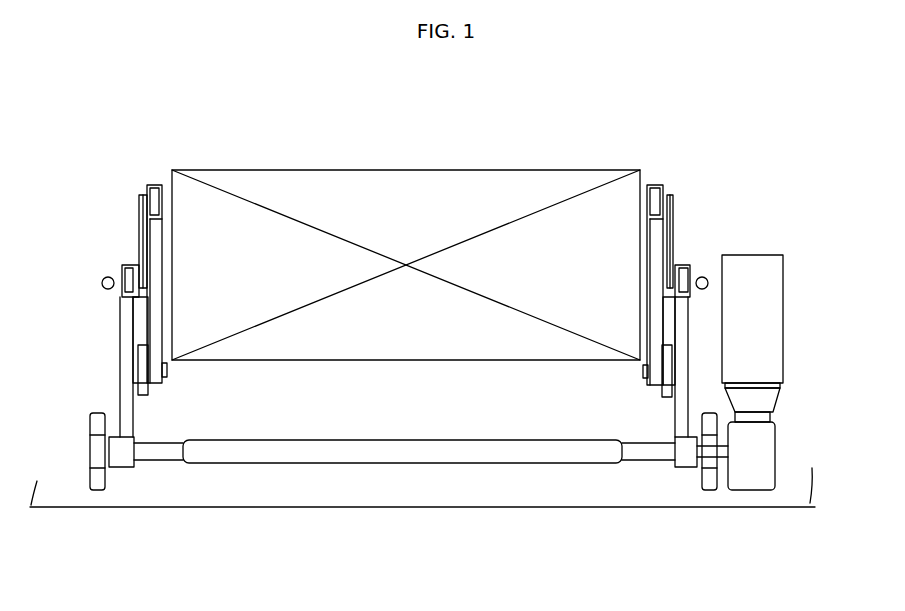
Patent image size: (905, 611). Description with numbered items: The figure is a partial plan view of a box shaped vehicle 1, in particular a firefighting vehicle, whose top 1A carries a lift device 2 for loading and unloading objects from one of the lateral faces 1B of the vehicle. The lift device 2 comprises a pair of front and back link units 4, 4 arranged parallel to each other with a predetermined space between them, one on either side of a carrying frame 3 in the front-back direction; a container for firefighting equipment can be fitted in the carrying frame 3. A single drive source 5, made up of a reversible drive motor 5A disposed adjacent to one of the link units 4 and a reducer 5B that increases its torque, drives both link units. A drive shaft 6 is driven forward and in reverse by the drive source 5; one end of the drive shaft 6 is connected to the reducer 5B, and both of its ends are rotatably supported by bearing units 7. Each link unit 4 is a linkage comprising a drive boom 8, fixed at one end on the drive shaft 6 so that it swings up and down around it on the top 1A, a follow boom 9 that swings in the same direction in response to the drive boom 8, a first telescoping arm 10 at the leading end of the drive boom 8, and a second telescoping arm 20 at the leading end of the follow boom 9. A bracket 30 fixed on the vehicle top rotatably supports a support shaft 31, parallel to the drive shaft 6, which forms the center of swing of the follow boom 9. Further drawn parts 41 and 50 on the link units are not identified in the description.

The vehicle 1 is at (629, 544).
The top of the vehicle 1A is at (320, 498).
The lateral face of the vehicle 1B is at (435, 507).
The lift device 2 is at (710, 172).
The carrying frame 3 is at (425, 170).
The link unit 4 is at (97, 237).
The drive source 5 is at (795, 372).
The drive motor 5A is at (777, 362).
The reducer 5B is at (783, 456).
The drive shaft 6 is at (512, 458).
The bearing unit 7 is at (98, 490).
The drive boom 8 is at (120, 352).
The follow boom 9 is at (148, 313).
The first telescoping arm 10 is at (99, 265).
The second telescoping arm 20 is at (140, 167).
The bracket 30 is at (133, 377).
The support shaft 31 is at (167, 373).
The guide 41 is at (138, 223).
The pivot pin 50 is at (102, 284).